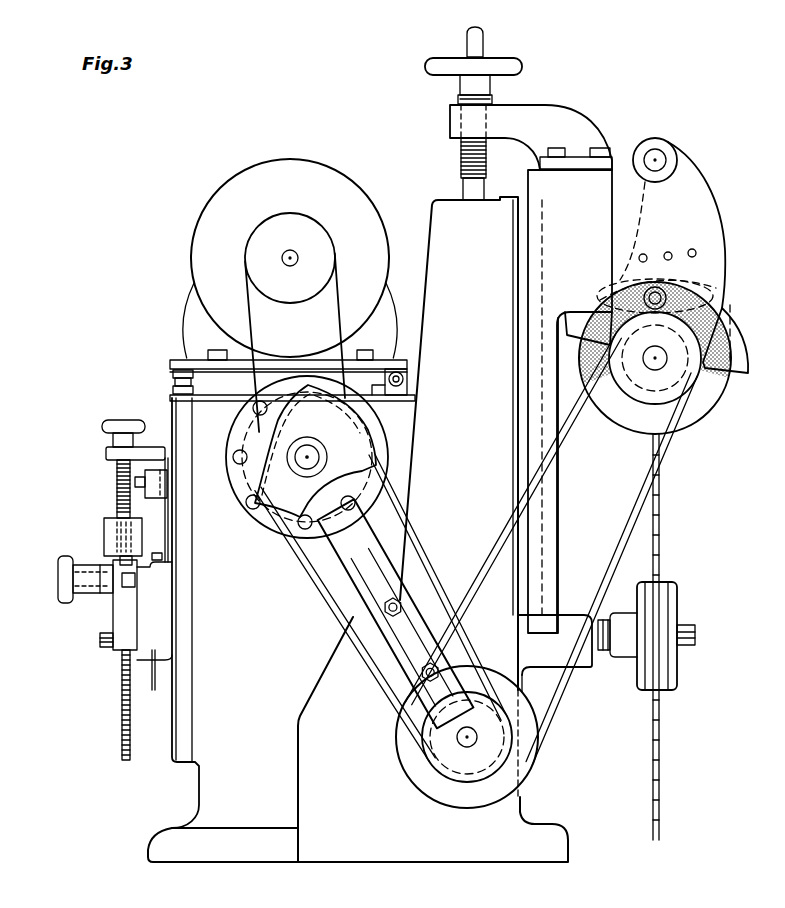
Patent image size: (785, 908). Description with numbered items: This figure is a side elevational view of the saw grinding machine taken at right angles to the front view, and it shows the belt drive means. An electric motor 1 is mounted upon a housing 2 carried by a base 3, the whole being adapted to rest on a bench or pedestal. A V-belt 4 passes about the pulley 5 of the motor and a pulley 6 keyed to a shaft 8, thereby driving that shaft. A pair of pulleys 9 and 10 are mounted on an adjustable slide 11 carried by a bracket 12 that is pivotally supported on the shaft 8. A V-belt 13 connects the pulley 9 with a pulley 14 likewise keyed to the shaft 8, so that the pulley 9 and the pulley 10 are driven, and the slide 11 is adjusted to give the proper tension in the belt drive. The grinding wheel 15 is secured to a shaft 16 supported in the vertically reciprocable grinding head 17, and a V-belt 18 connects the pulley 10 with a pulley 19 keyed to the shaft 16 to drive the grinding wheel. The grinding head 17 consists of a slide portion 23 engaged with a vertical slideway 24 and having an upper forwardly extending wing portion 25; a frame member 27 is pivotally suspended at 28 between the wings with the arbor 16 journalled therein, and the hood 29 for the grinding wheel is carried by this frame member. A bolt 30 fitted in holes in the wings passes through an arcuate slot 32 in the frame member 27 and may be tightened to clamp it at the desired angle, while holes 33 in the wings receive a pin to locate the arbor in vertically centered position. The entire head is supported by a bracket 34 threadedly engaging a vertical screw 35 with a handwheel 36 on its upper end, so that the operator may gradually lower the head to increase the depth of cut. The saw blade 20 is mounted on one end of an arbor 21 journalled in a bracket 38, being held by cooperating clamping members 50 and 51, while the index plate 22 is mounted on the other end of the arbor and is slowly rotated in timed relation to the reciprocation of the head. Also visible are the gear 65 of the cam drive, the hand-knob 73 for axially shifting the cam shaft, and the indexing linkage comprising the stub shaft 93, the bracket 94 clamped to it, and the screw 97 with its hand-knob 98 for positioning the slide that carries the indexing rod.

The electric motor 1 is at (200, 213).
The housing 2 is at (210, 785).
The base 3 is at (160, 848).
The V-belt 4 is at (247, 303).
The pulley 5 is at (262, 222).
The pulley 6 is at (248, 472).
The shaft 8 is at (316, 457).
The pulley 9 is at (455, 770).
The pulley 10 is at (490, 770).
The adjustable slide 11 is at (420, 718).
The bracket 12 is at (345, 572).
The V-belt 13 is at (298, 568).
The pulley 14 is at (282, 500).
The grinding wheel 15 is at (712, 394).
The shaft 16 is at (648, 372).
The grinding head 17 is at (590, 200).
The V-belt 18 is at (566, 688).
The pulley 19 is at (655, 364).
The saw blade 20 is at (662, 520).
The arbor 21 is at (695, 635).
The index plate 22 is at (123, 725).
The slide portion 23 is at (520, 355).
The vertical slideway 24 is at (515, 300).
The wing portion 25 is at (680, 185).
The frame member 27 is at (700, 330).
The pivot 28 is at (660, 156).
The hood 29 is at (738, 340).
The bolt 30 is at (645, 292).
The arcuate slot 32 is at (703, 272).
The holes 33 is at (667, 252).
The bracket 34 is at (540, 115).
The vertical screw 35 is at (460, 152).
The handwheel 36 is at (432, 60).
The bracket 38 is at (566, 612).
The clamping member 50 is at (640, 692).
The clamping member 51 is at (672, 590).
The gear 65 is at (113, 610).
The hand-knob 73 is at (58, 574).
The stub shaft 93 is at (145, 481).
The bracket 94 is at (155, 447).
The screw 97 is at (125, 503).
The hand-knob 98 is at (104, 421).